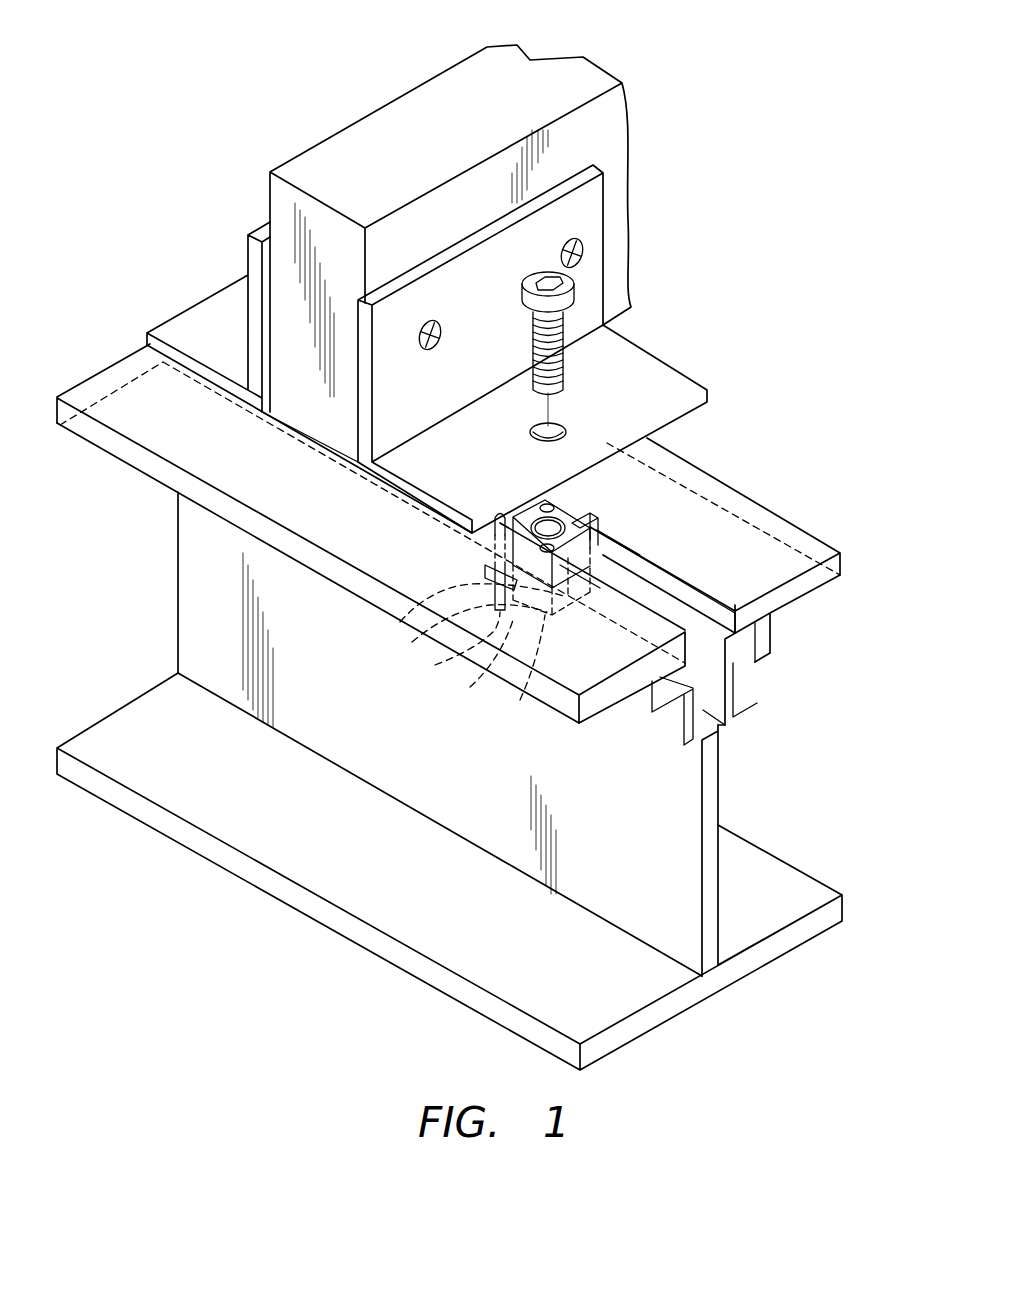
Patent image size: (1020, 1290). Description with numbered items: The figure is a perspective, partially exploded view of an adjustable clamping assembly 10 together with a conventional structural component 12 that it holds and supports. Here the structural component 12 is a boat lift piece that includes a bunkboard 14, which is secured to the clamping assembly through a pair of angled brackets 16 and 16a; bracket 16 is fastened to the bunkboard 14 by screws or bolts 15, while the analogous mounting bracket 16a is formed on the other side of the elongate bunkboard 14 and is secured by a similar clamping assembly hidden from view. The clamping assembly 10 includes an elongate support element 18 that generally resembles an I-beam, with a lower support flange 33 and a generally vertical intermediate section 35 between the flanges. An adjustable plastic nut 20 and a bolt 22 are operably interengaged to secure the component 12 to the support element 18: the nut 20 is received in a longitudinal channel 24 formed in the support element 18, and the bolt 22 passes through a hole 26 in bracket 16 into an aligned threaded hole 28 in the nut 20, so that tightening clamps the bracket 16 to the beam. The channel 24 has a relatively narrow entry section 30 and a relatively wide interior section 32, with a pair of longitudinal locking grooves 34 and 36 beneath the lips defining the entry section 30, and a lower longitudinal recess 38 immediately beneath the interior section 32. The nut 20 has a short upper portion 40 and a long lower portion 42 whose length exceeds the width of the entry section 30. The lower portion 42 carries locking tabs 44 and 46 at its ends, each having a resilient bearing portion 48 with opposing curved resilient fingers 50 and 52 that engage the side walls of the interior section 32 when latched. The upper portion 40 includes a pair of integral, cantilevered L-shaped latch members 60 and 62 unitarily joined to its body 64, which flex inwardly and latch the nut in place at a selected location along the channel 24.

The adjustable clamping assembly 10 is at (729, 407).
The structural component 12 is at (290, 400).
The bunkboard 14 is at (620, 263).
The screws or bolts 15 is at (584, 246).
The angled bracket 16 is at (400, 484).
The angled bracket 16a is at (217, 380).
The support element 18 is at (742, 483).
The adjustable plastic nut 20 is at (572, 508).
The bolt 22 is at (566, 343).
The longitudinal channel 24 is at (708, 592).
The hole 26 is at (557, 427).
The hole 28 is at (553, 516).
The entry section 30 is at (723, 617).
The interior section 32 is at (738, 652).
The lower support flange 33 is at (617, 1016).
The longitudinal locking groove 34 is at (686, 697).
The intermediate section 35 is at (719, 803).
The longitudinal locking groove 36 is at (707, 640).
The lower longitudinal recess 38 is at (705, 708).
The upper portion 40 is at (590, 546).
The lower portion 42 is at (520, 677).
The locking tab 44 is at (478, 686).
The locking tab 46 is at (605, 578).
The resilient bearing portion 48 is at (420, 637).
The curved resilient finger 50 is at (437, 666).
The curved resilient finger 52 is at (403, 622).
The latch member 60 is at (492, 556).
The latch member 62 is at (592, 515).
The body 64 is at (583, 540).